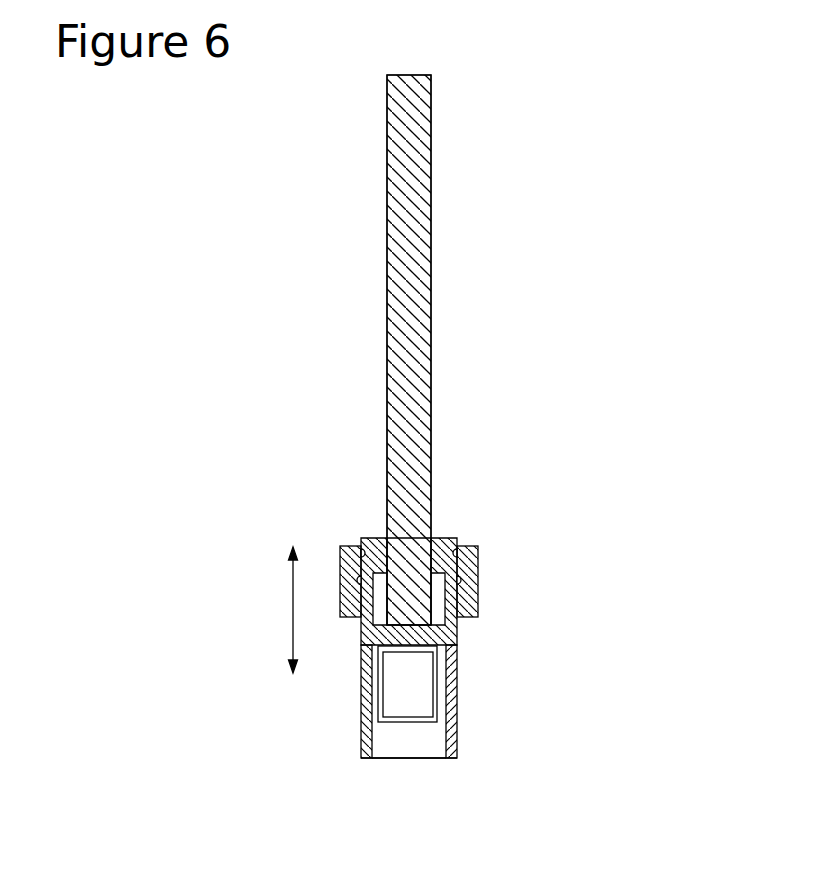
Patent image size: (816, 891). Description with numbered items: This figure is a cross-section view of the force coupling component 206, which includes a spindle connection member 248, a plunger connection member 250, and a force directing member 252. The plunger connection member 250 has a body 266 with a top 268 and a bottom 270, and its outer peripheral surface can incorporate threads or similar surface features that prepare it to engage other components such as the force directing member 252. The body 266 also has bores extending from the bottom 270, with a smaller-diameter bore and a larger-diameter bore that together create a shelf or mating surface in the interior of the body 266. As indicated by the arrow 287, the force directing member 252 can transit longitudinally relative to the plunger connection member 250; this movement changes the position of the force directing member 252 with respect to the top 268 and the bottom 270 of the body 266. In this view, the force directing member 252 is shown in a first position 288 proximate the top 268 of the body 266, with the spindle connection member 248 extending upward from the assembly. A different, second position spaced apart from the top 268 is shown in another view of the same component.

The force coupling component 206 is at (622, 64).
The spindle connection member 248 is at (460, 271).
The plunger connection member 250 is at (468, 694).
The force directing member 252 is at (483, 558).
The body 266 is at (458, 677).
The top 268 is at (354, 530).
The bottom 270 is at (378, 792).
The arrow 287 is at (293, 610).
The first position 288 is at (587, 583).